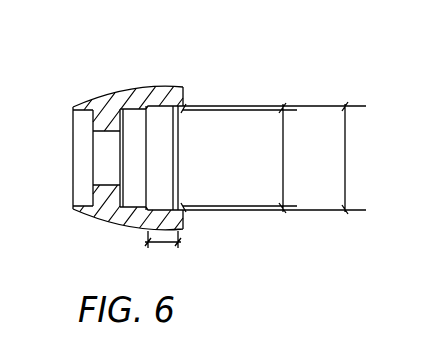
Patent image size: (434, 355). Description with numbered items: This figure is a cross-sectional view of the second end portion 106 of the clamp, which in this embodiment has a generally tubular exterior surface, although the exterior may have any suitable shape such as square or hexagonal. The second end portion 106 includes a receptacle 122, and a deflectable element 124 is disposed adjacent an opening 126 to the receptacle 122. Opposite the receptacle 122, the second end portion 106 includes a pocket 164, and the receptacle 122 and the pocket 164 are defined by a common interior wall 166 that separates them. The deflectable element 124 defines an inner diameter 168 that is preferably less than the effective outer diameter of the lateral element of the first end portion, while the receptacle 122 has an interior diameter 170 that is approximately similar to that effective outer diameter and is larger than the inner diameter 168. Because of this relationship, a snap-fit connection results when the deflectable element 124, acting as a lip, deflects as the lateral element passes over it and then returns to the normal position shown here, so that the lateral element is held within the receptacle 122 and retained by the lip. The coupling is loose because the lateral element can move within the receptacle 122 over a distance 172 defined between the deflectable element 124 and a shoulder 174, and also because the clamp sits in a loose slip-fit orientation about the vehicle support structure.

The second end portion 106 is at (111, 84).
The receptacle 122 is at (162, 134).
The deflectable element 124 is at (181, 111).
The opening 126 is at (186, 160).
The pocket 164 is at (82, 193).
The common interior wall 166 is at (108, 185).
The inner diameter 168 is at (283, 160).
The interior diameter 170 is at (345, 160).
The distance 172 is at (163, 244).
The shoulder 174 is at (131, 223).